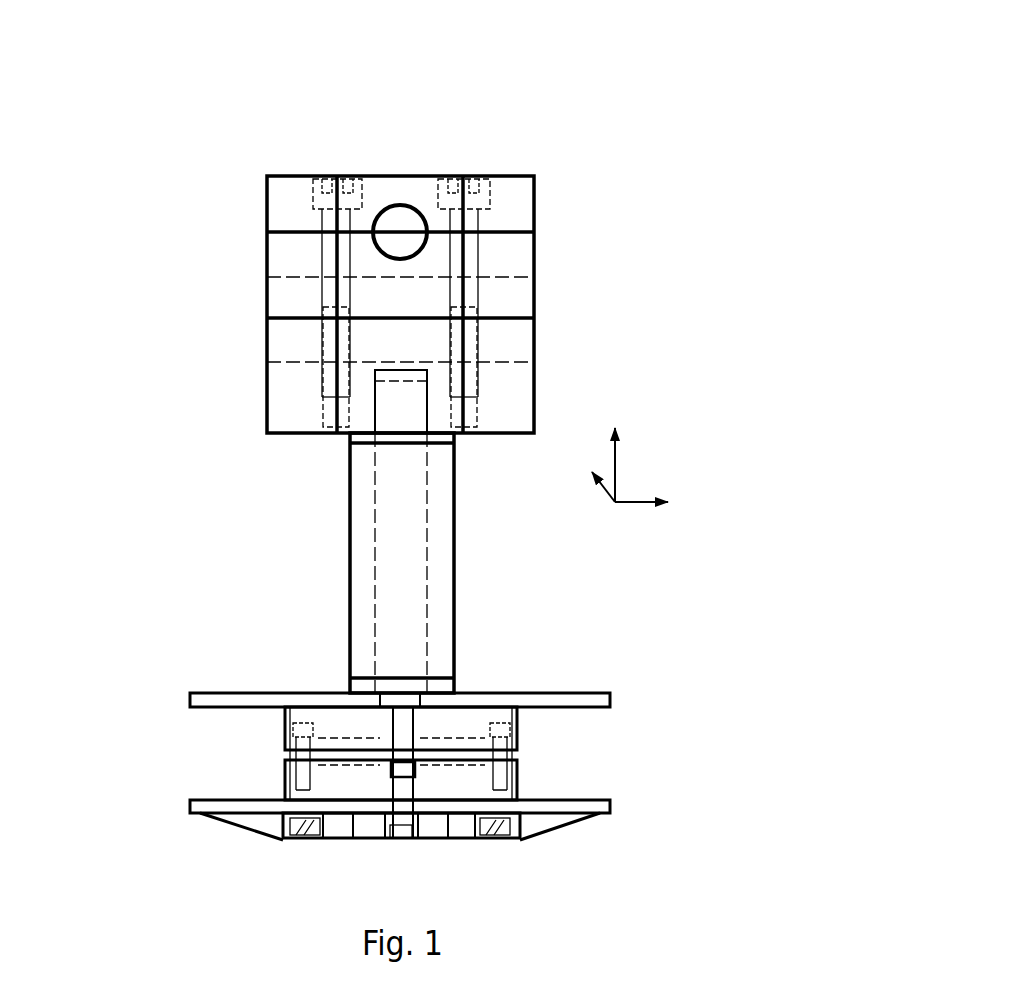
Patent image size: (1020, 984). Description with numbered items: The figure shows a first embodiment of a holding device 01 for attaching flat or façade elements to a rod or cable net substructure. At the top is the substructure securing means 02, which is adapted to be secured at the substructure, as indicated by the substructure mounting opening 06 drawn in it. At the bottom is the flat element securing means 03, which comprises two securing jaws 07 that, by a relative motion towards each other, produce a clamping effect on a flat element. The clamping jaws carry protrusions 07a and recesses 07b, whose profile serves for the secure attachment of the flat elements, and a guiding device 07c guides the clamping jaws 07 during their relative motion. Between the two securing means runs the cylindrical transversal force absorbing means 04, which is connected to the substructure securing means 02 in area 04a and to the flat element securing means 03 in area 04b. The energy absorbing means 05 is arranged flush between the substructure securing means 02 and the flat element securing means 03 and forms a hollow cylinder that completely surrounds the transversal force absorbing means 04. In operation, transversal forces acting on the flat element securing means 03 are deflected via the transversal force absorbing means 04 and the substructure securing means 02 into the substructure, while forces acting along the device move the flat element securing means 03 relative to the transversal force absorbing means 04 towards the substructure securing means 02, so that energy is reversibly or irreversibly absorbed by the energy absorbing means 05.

The holding device 01 is at (600, 102).
The substructure securing means 02 is at (590, 296).
The flat element securing means 03 is at (688, 750).
The transversal force absorbing means 04 is at (405, 515).
The area of connection to the substructure securing means 04a is at (395, 407).
The area of connection to the flat element securing means 04b is at (383, 720).
The energy absorbing means 05 is at (440, 557).
The substructure mounting opening 06 is at (404, 229).
The securing jaws 07 is at (210, 705).
The protrusions 07a is at (527, 772).
The recesses 07b is at (472, 737).
The guiding device 07c is at (405, 768).